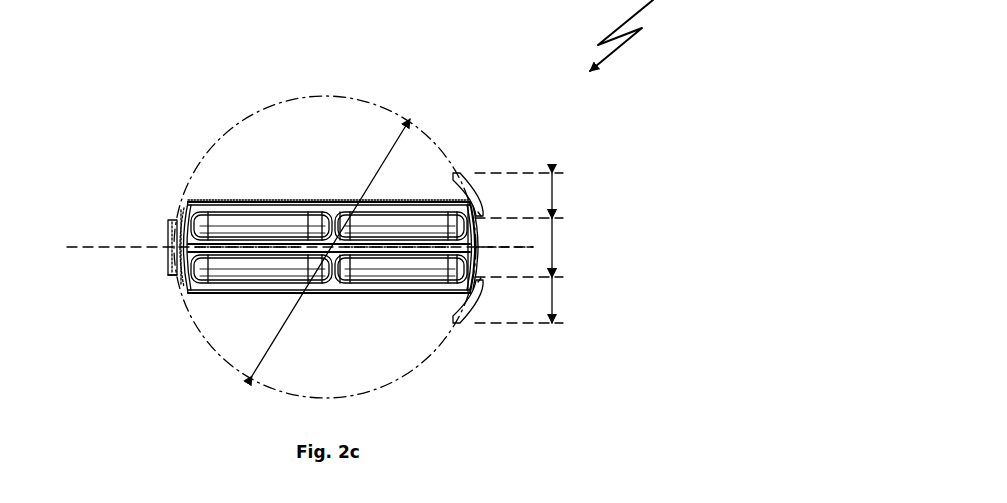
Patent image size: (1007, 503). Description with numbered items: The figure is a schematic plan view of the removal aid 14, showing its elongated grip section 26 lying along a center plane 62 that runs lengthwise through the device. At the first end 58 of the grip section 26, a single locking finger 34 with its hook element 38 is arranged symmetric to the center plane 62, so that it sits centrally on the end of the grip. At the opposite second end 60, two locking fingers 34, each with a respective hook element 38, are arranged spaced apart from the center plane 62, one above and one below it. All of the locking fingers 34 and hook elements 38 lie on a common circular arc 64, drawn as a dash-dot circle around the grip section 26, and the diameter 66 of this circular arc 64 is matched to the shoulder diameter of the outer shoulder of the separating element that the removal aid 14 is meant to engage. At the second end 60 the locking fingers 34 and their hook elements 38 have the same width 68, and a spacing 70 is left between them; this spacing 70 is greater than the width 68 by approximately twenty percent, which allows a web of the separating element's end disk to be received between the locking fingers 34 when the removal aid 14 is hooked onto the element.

The removal aid 14 is at (639, 35).
The grip section 26 is at (268, 188).
The locking finger 34 is at (172, 222).
The hook element 38 is at (170, 255).
The first end 58 is at (171, 283).
The second end 60 is at (492, 237).
The center plane 62 is at (103, 249).
The circular arc 64 is at (240, 127).
The diameter 66 is at (275, 345).
The width 68 is at (555, 190).
The spacing 70 is at (552, 250).